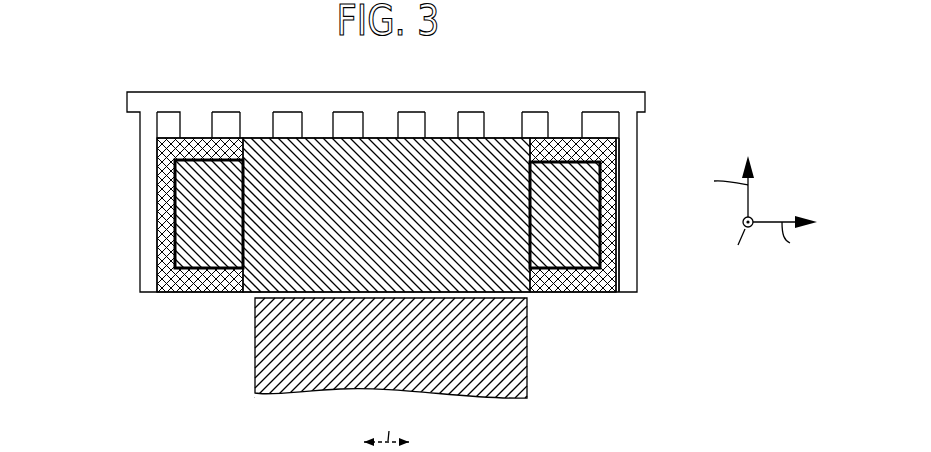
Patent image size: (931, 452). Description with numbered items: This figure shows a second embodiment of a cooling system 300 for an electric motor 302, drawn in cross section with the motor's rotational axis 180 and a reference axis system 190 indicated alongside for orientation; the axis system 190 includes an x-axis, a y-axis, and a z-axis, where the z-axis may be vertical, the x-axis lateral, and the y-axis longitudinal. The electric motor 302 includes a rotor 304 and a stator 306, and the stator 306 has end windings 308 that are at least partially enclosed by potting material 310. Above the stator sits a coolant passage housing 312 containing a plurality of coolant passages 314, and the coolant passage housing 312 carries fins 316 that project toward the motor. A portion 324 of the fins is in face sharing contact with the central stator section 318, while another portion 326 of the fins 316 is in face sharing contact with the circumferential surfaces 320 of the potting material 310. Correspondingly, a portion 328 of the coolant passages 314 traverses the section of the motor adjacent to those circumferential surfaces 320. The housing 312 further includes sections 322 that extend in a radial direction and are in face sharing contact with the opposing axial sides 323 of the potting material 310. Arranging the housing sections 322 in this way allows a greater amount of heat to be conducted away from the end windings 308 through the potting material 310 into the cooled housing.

The rotational axis 180 is at (386, 426).
The axis system 190 is at (782, 194).
The cooling system 300 is at (688, 79).
The electric motor 302 is at (742, 41).
The rotor 304 is at (369, 353).
The stator 306 is at (358, 128).
The end windings 308 is at (195, 223).
The potting material 310 is at (207, 280).
The coolant passage housing 312 is at (300, 84).
The coolant passages 314 is at (224, 126).
The fins 316 is at (322, 128).
The central stator section 318 is at (366, 223).
The circumferential surfaces 320 is at (563, 160).
The sections 322 is at (623, 241).
The opposing axial sides 323 is at (624, 212).
The portion of fins 324 is at (460, 124).
The portion of fins 326 is at (171, 126).
The portion of coolant passages 328 is at (620, 121).